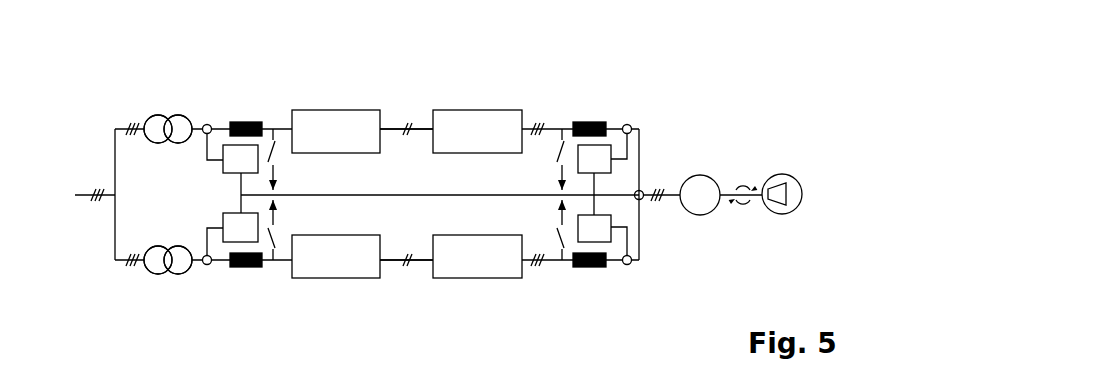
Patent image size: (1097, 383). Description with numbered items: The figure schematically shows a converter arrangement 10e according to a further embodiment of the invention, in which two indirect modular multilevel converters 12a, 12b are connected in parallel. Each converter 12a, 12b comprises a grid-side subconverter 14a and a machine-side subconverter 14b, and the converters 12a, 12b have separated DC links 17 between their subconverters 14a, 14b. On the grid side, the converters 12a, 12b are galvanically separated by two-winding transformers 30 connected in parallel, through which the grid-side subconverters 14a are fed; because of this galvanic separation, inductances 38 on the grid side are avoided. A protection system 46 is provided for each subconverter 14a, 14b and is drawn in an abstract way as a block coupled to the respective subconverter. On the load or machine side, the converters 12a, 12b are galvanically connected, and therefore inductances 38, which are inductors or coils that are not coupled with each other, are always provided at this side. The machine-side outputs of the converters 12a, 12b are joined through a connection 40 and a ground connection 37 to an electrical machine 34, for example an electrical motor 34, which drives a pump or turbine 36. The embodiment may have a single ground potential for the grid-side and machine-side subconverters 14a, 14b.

The converter arrangement 10e is at (690, 80).
The modular multilevel converter 12a is at (134, 108).
The modular multilevel converter 12b is at (147, 282).
The transformer 30 is at (182, 114).
The subconverter 14a is at (317, 109).
The subconverter 14b is at (497, 109).
The DC link 17 is at (388, 130).
The inductance 38 is at (589, 121).
The protection system 46 is at (223, 172).
The connection line 40 is at (118, 197).
The ground connection 37 is at (107, 198).
The electrical machine 34 is at (712, 214).
The pump or turbine 36 is at (782, 214).